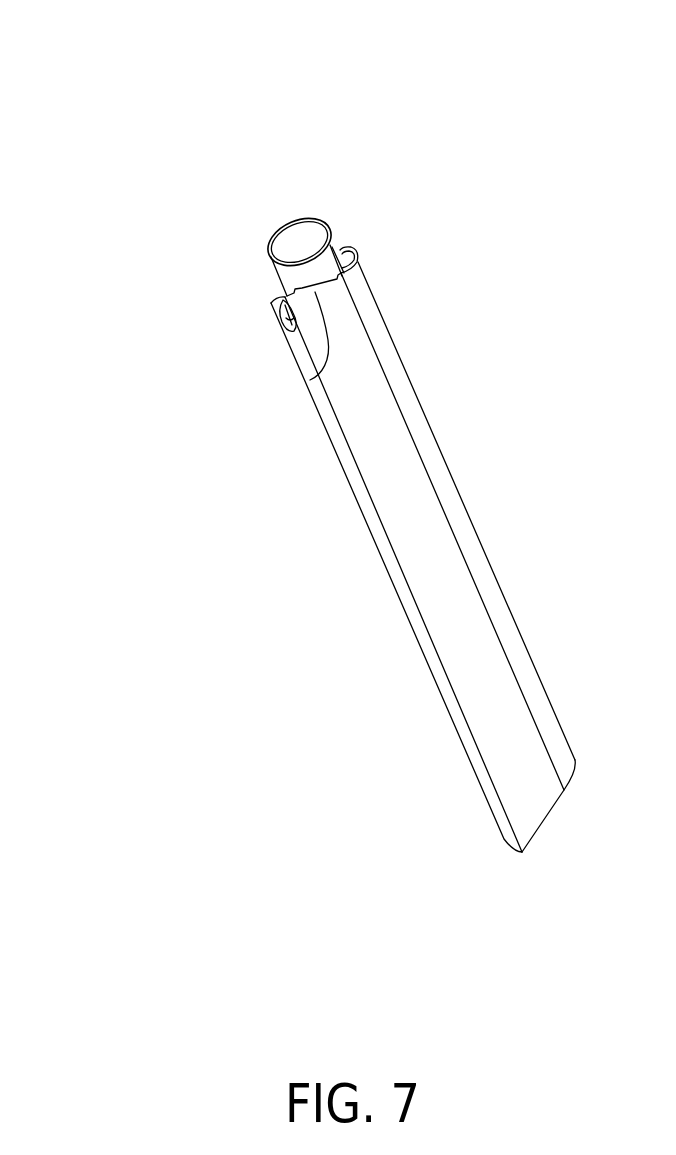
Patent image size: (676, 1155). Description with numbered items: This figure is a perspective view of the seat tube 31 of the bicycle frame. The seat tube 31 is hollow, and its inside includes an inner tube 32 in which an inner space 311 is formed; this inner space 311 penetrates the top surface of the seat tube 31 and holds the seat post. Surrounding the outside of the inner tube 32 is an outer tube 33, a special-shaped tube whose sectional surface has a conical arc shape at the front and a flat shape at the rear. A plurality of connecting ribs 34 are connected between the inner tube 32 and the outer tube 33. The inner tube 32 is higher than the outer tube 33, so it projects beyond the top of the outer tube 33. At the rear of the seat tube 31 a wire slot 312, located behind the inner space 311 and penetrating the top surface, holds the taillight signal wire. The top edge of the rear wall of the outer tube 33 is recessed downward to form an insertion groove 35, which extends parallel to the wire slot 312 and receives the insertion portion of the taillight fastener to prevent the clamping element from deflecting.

The seat tube 31 is at (86, 47).
The inner space 311 is at (305, 245).
The inner tube 32 is at (271, 262).
The wire slot 312 is at (280, 305).
The outer tube 33 is at (418, 425).
The connecting ribs 34 is at (310, 380).
The insertion groove 35 is at (285, 319).